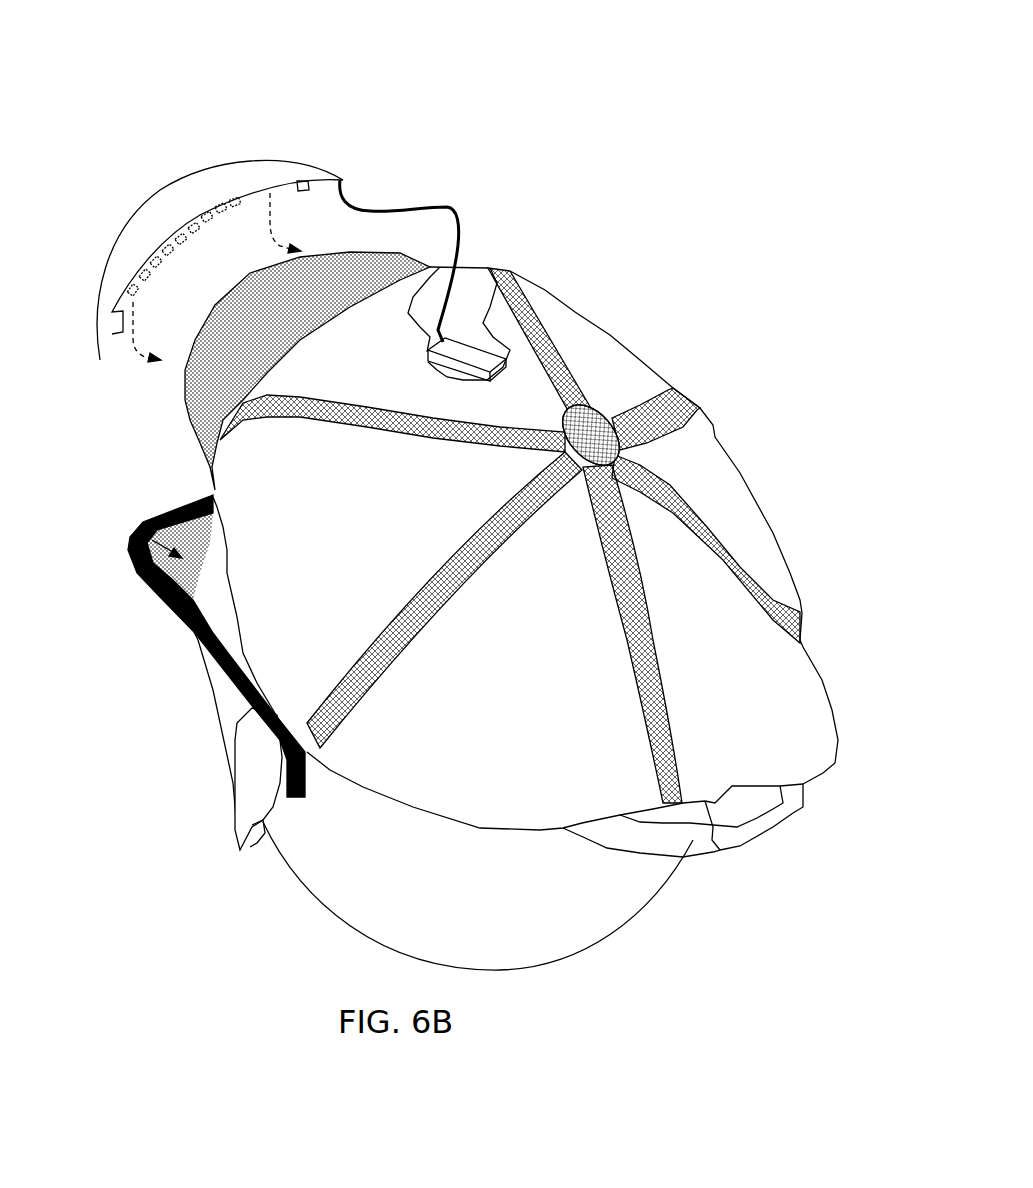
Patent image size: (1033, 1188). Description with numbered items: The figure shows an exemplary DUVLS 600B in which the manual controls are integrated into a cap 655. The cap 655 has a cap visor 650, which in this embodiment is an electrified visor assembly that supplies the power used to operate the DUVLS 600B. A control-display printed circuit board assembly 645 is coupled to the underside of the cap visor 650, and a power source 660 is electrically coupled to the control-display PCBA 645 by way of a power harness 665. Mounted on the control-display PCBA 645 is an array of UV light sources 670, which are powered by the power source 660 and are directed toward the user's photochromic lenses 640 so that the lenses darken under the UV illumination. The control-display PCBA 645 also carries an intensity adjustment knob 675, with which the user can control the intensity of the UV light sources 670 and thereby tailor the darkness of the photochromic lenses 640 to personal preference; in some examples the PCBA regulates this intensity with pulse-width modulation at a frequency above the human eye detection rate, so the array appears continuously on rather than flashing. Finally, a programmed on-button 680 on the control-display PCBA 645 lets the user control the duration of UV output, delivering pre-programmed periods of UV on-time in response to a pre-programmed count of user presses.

The DUVLS 600B is at (450, 512).
The photochromic lenses 640 is at (148, 518).
The control-display printed circuit board assembly 645 is at (244, 241).
The cap visor 650 is at (193, 453).
The cap 655 is at (610, 297).
The power source 660 is at (457, 378).
The power harness 665 is at (452, 208).
The array of UV light sources 670 is at (179, 272).
The intensity adjustment knob 675 is at (113, 335).
The programmed on-button 680 is at (303, 184).